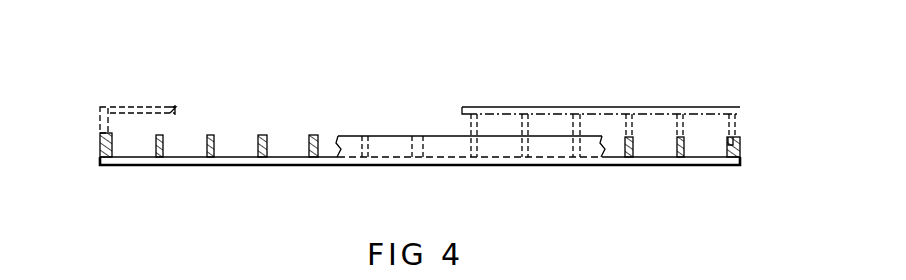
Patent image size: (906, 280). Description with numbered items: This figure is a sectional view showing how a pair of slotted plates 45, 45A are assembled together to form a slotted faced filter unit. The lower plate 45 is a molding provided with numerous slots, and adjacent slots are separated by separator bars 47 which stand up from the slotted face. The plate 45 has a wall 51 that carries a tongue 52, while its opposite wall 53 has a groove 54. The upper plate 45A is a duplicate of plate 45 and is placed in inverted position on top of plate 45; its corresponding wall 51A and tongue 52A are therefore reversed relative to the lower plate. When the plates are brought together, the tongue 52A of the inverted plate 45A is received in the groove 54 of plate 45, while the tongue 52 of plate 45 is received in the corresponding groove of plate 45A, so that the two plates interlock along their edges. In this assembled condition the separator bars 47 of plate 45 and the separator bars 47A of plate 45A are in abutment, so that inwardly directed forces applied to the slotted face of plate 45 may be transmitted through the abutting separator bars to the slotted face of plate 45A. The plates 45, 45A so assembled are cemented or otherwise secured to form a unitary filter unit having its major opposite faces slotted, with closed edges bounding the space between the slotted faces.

The slotted plate 45 is at (140, 178).
The slotted plate 45A is at (590, 101).
The separator bar 47 is at (686, 146).
The separator bar 47A is at (685, 132).
The wall 51 is at (100, 157).
The wall 51A is at (741, 113).
The tongue 52 is at (106, 130).
The tongue 52A is at (738, 110).
The wall 53 is at (741, 152).
The groove 54 is at (117, 129).